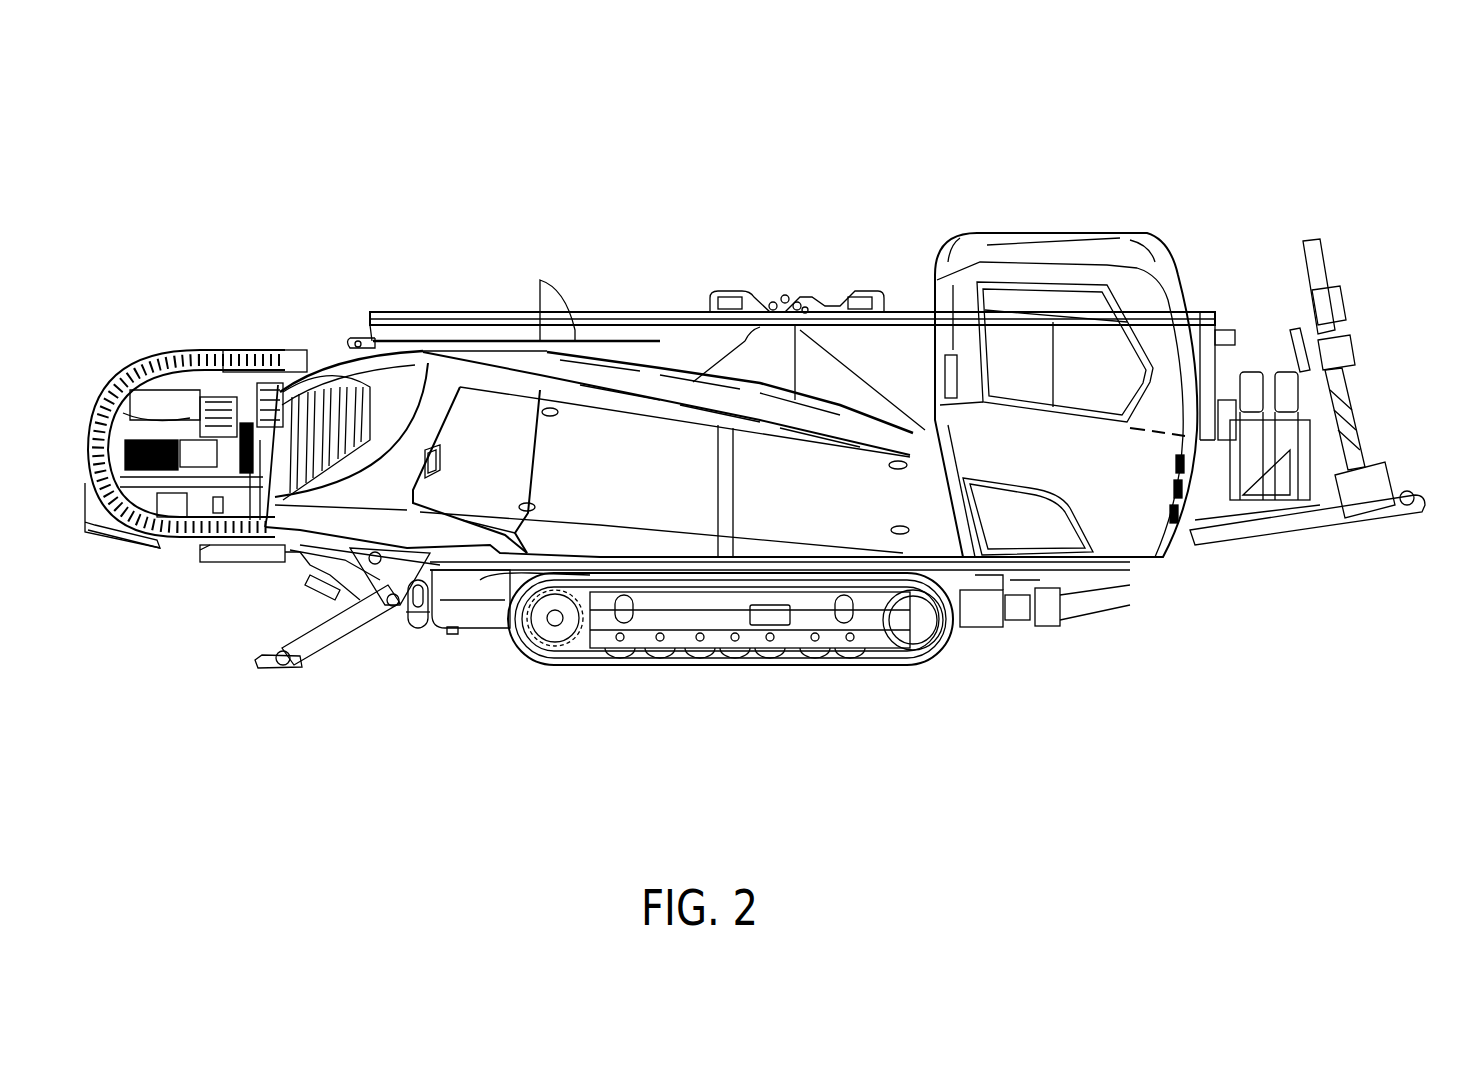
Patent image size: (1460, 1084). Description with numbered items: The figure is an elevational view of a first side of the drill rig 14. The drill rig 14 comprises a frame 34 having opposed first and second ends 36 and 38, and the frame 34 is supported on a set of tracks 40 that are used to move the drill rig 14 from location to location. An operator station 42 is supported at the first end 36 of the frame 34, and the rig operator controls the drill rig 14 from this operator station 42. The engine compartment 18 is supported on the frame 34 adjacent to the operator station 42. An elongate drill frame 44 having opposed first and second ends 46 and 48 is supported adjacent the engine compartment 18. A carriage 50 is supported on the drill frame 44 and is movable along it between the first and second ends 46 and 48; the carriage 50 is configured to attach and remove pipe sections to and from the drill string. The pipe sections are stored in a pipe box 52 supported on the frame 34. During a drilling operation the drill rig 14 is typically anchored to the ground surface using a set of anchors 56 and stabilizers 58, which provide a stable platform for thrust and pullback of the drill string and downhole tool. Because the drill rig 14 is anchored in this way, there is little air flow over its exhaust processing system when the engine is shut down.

The drill rig 14 is at (733, 163).
The engine compartment 18 is at (630, 382).
The frame 34 is at (484, 628).
The first end 36 is at (1010, 628).
The second end 38 is at (428, 622).
The tracks 40 is at (733, 656).
The operator station 42 is at (1078, 236).
The drill frame 44 is at (322, 553).
The first end 46 is at (1196, 545).
The second end 48 is at (222, 552).
The carriage 50 is at (246, 345).
The pipe box 52 is at (696, 311).
The anchors 56 is at (1372, 503).
The stabilizers 58 is at (328, 633).